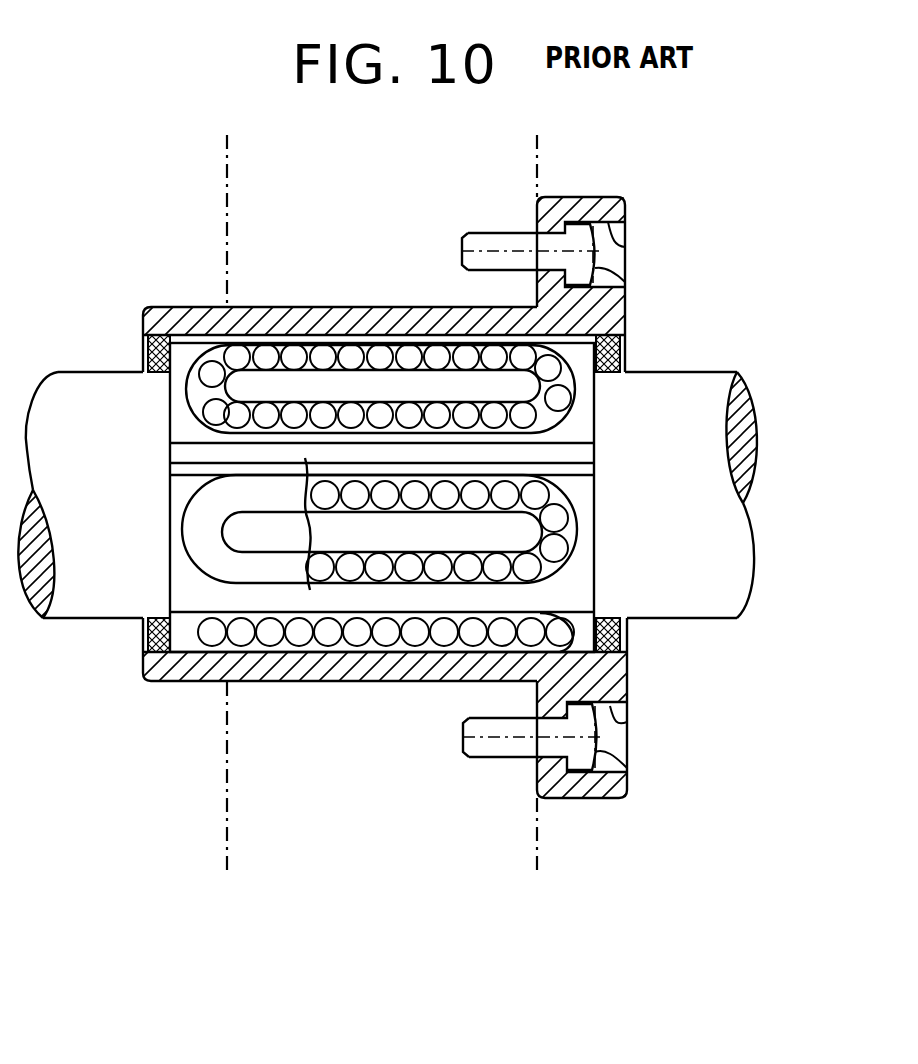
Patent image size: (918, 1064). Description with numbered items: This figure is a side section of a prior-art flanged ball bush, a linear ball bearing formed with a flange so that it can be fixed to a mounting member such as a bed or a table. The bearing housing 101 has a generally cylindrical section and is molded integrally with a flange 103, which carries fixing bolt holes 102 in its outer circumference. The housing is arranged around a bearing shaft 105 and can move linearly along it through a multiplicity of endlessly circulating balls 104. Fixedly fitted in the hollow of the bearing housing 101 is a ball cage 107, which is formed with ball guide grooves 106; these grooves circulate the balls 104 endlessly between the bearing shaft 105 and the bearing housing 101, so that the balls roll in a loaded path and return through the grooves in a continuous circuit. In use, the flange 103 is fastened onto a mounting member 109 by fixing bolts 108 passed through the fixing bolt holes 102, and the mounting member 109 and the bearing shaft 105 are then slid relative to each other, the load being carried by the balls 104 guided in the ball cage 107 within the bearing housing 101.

The bearing housing 101 is at (401, 308).
The fixing bolt holes 102 is at (628, 247).
The flange 103 is at (578, 207).
The balls 104 is at (300, 341).
The bearing shaft 105 is at (716, 622).
The ball guide grooves 106 is at (222, 490).
The ball cage 107 is at (187, 642).
The fixing bolts 108 is at (628, 284).
The mounting member 109 is at (545, 858).